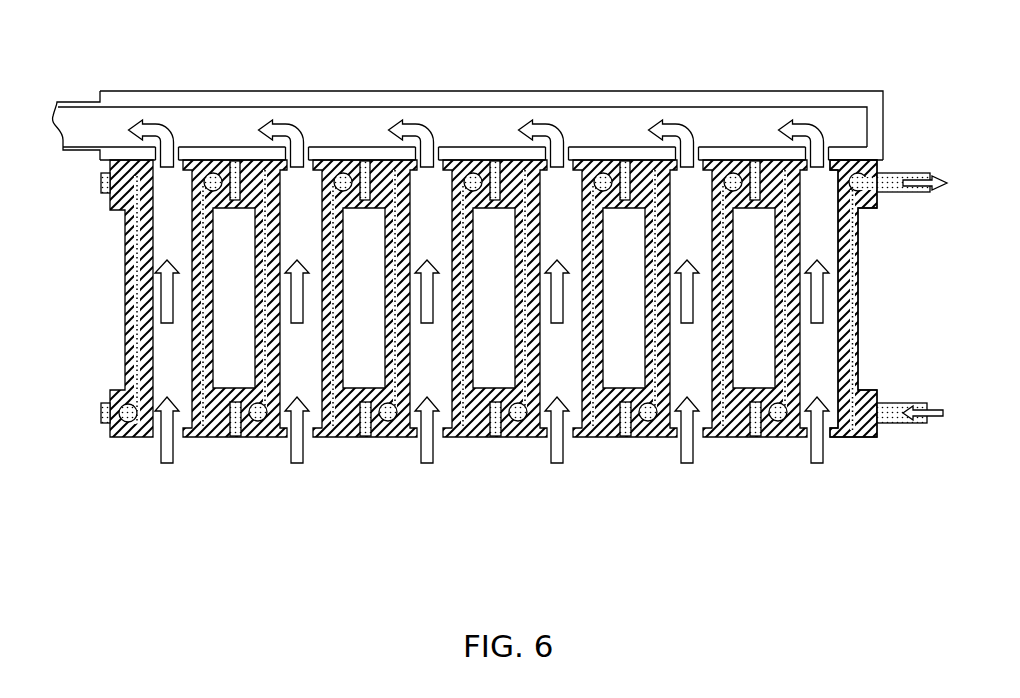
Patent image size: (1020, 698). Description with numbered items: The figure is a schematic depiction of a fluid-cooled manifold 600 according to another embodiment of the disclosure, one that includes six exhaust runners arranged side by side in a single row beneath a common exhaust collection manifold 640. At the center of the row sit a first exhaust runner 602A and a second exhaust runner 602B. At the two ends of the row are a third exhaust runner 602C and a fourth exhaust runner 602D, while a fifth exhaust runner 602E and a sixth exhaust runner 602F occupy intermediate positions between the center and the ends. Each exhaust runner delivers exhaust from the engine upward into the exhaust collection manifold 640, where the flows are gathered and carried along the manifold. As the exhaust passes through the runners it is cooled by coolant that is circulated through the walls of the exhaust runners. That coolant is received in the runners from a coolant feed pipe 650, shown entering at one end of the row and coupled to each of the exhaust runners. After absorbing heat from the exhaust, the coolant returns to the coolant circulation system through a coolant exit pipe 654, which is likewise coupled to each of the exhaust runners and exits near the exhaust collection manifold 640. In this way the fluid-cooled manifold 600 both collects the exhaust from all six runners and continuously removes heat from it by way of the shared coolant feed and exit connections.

The fluid-cooled manifold 600 is at (504, 253).
The exhaust collection manifold 640 is at (553, 91).
The coolant exit pipe 654 is at (888, 194).
The coolant feed pipe 650 is at (893, 425).
The third exhaust runner 602C is at (188, 450).
The fifth exhaust runner 602E is at (315, 450).
The first exhaust runner 602A is at (447, 450).
The second exhaust runner 602B is at (578, 450).
The sixth exhaust runner 602F is at (710, 450).
The fourth exhaust runner 602D is at (845, 450).